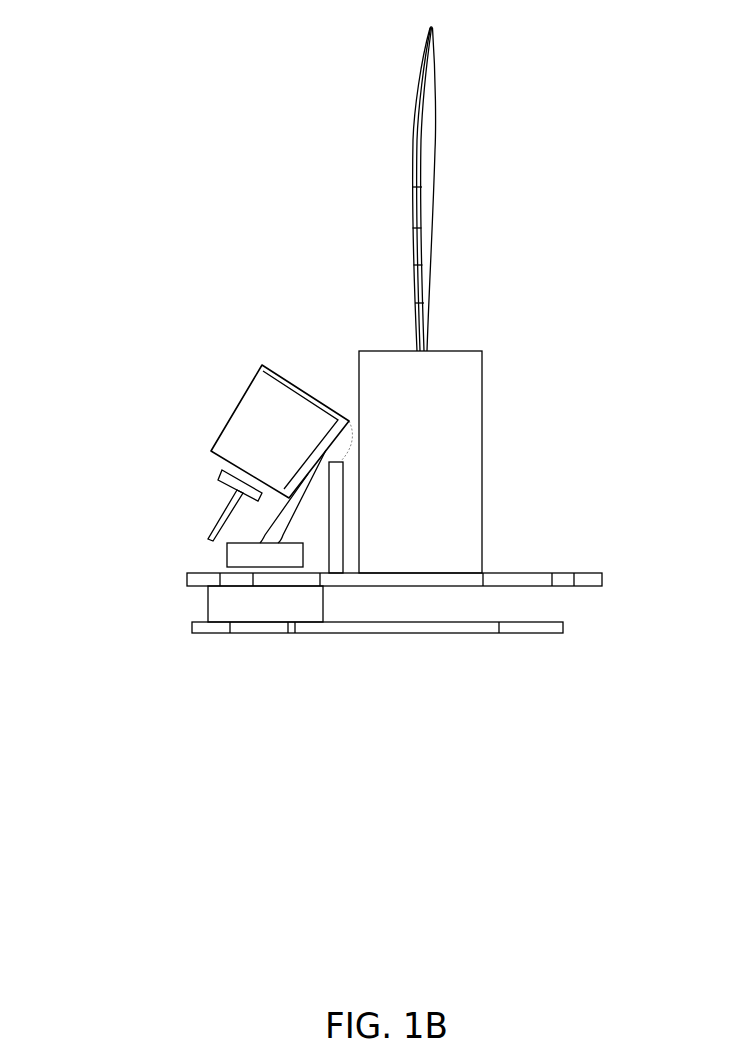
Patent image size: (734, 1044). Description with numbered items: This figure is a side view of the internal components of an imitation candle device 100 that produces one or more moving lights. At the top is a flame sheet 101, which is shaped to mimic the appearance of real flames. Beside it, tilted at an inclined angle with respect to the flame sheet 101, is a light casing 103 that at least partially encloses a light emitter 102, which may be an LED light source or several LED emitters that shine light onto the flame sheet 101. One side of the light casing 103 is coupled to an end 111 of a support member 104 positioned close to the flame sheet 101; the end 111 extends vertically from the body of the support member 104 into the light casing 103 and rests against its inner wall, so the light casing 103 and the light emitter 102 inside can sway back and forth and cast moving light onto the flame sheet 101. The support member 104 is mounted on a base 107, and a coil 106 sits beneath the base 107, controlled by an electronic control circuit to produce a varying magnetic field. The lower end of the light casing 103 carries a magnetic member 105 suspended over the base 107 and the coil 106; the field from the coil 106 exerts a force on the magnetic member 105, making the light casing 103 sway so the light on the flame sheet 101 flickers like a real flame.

The imitation candle device 100 is at (57, 32).
The flame sheet 101 is at (428, 207).
The light emitter 102 is at (233, 482).
The light casing 103 is at (268, 418).
The support member 104 is at (333, 515).
The magnetic member 105 is at (260, 557).
The coil 106 is at (285, 607).
The base 107 is at (500, 578).
The end of support member 111 is at (336, 460).